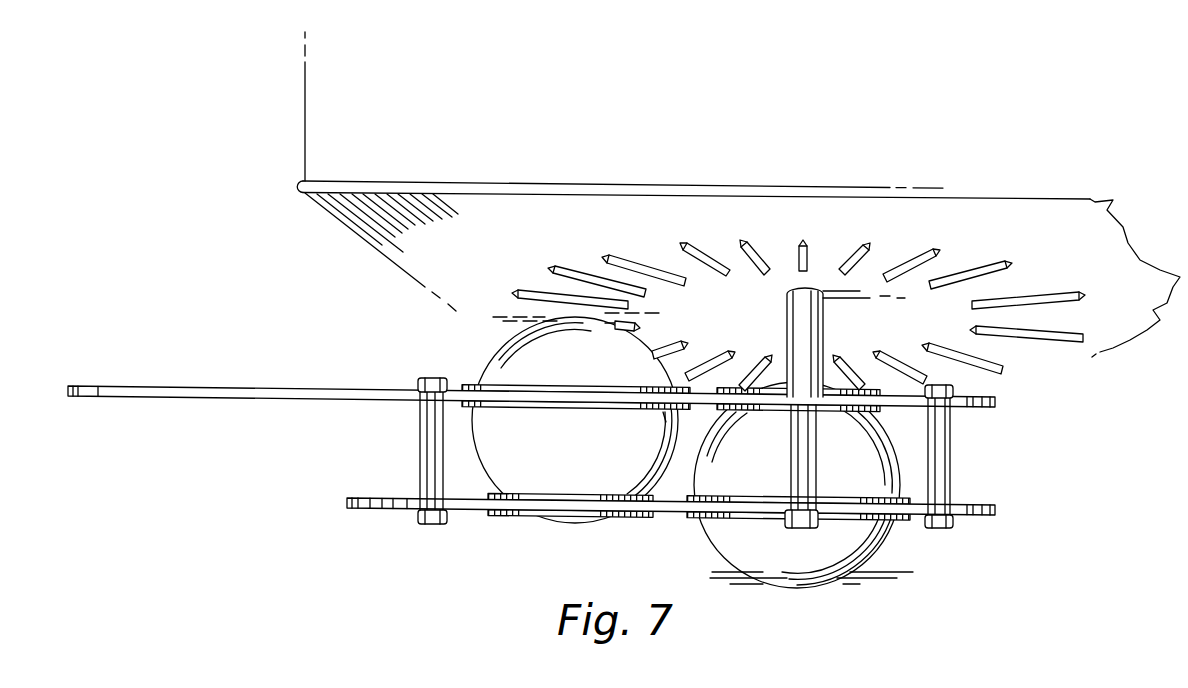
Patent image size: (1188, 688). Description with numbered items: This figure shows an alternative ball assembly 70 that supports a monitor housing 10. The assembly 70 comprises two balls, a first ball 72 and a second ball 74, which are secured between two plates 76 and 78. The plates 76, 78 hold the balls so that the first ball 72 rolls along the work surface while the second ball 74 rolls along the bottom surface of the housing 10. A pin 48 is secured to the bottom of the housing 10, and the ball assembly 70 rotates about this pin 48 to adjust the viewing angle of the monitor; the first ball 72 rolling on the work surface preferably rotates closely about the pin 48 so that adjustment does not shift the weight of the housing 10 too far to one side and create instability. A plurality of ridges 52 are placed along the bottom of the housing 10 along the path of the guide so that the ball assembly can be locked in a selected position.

The monitor housing 10 is at (735, 163).
The pin 48 is at (818, 453).
The ridges 52 is at (842, 264).
The ball assembly 70 is at (330, 449).
The first ball 72 is at (767, 474).
The second ball 74 is at (606, 450).
The plate 76 is at (132, 398).
The plate 78 is at (345, 505).